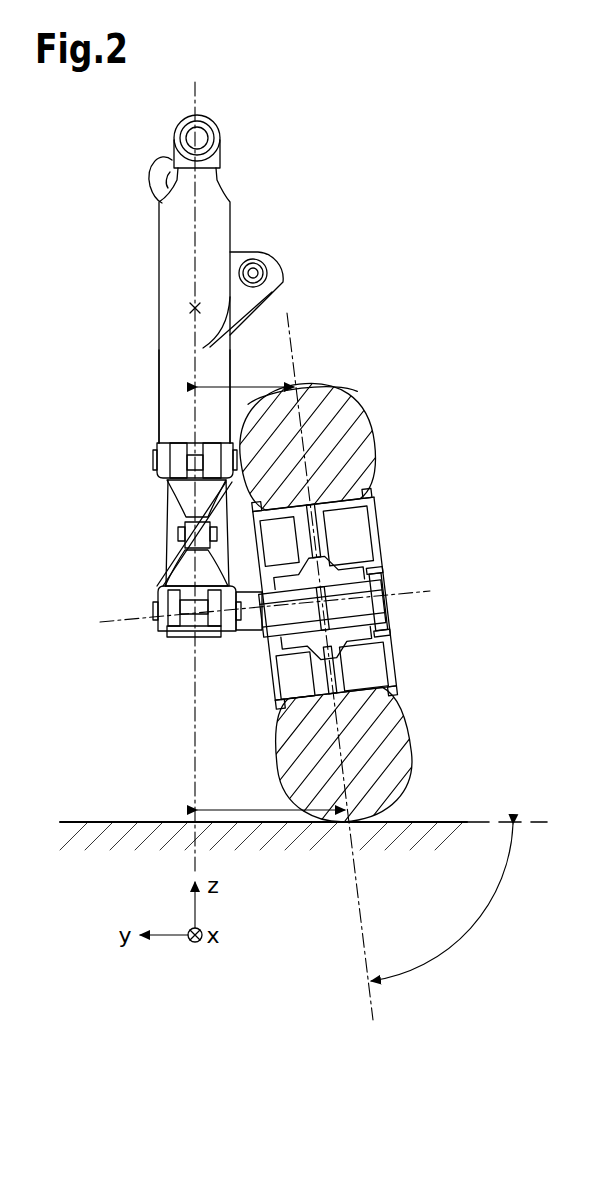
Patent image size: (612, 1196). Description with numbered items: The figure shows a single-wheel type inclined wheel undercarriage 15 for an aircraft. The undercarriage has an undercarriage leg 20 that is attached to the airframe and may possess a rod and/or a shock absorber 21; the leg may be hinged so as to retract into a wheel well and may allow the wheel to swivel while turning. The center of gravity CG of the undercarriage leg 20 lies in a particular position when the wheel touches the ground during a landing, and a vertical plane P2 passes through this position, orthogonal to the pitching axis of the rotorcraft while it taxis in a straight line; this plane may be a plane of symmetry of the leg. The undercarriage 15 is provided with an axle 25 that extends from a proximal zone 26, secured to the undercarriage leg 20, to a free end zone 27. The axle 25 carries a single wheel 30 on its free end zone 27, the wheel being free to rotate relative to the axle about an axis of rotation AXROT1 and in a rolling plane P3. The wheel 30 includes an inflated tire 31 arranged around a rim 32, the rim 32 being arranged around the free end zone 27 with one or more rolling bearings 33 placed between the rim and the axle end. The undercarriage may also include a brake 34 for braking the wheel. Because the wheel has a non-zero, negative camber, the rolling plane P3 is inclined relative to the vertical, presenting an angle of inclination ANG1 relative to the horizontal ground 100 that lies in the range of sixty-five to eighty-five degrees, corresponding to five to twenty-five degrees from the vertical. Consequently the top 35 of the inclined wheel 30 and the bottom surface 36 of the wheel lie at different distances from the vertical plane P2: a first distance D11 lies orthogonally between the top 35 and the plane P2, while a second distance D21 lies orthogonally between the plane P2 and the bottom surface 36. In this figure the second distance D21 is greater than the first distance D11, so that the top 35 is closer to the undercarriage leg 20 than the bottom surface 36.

The inclined wheel undercarriage 15 is at (138, 454).
The undercarriage leg 20 is at (159, 332).
The shock absorber 21 is at (159, 358).
The axle 25 is at (236, 660).
The proximal zone 26 is at (233, 640).
The end zone 27 is at (367, 571).
The wheel 30 is at (329, 623).
The tire 31 is at (344, 418).
The rim 32 is at (370, 496).
The rolling bearings 33 is at (356, 560).
The brake 34 is at (267, 678).
The top 35 is at (303, 358).
The bottom surface 36 is at (348, 824).
The ground 100 is at (426, 820).
The vertical plane P2 is at (195, 103).
The rolling plane P3 is at (360, 905).
The center of gravity CG is at (193, 308).
The axis of rotation AXROT1 is at (225, 594).
The first distance D11 is at (245, 368).
The second distance D21 is at (271, 798).
The angle of inclination ANG1 is at (456, 902).